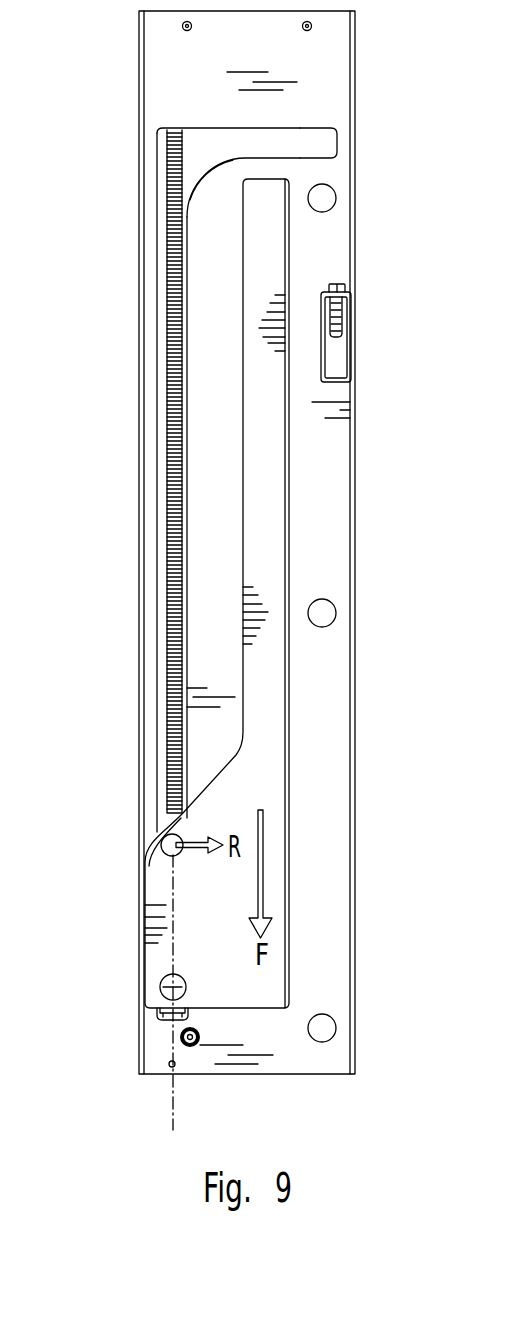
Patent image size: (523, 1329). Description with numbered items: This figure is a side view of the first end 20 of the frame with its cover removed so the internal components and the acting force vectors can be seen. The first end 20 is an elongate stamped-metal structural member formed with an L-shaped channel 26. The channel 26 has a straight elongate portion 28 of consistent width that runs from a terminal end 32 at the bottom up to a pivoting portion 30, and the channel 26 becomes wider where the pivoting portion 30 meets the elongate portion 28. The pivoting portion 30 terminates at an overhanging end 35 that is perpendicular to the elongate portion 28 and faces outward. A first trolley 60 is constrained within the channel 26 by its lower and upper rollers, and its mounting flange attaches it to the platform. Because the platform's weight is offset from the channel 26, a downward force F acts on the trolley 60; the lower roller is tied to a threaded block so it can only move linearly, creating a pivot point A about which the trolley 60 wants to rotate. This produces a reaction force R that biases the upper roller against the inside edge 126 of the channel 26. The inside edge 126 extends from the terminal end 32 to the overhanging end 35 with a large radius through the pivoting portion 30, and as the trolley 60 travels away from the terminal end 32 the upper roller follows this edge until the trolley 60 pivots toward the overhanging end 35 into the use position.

The first end 20 is at (322, 823).
The channel 26 is at (157, 520).
The elongate portion 28 is at (162, 622).
The pivoting portion 30 is at (200, 134).
The terminal end 32 is at (167, 1022).
The overhanging end 35 is at (333, 142).
The first trolley 60 is at (236, 972).
The inside edge 126 is at (205, 174).
The pivot point A is at (157, 985).